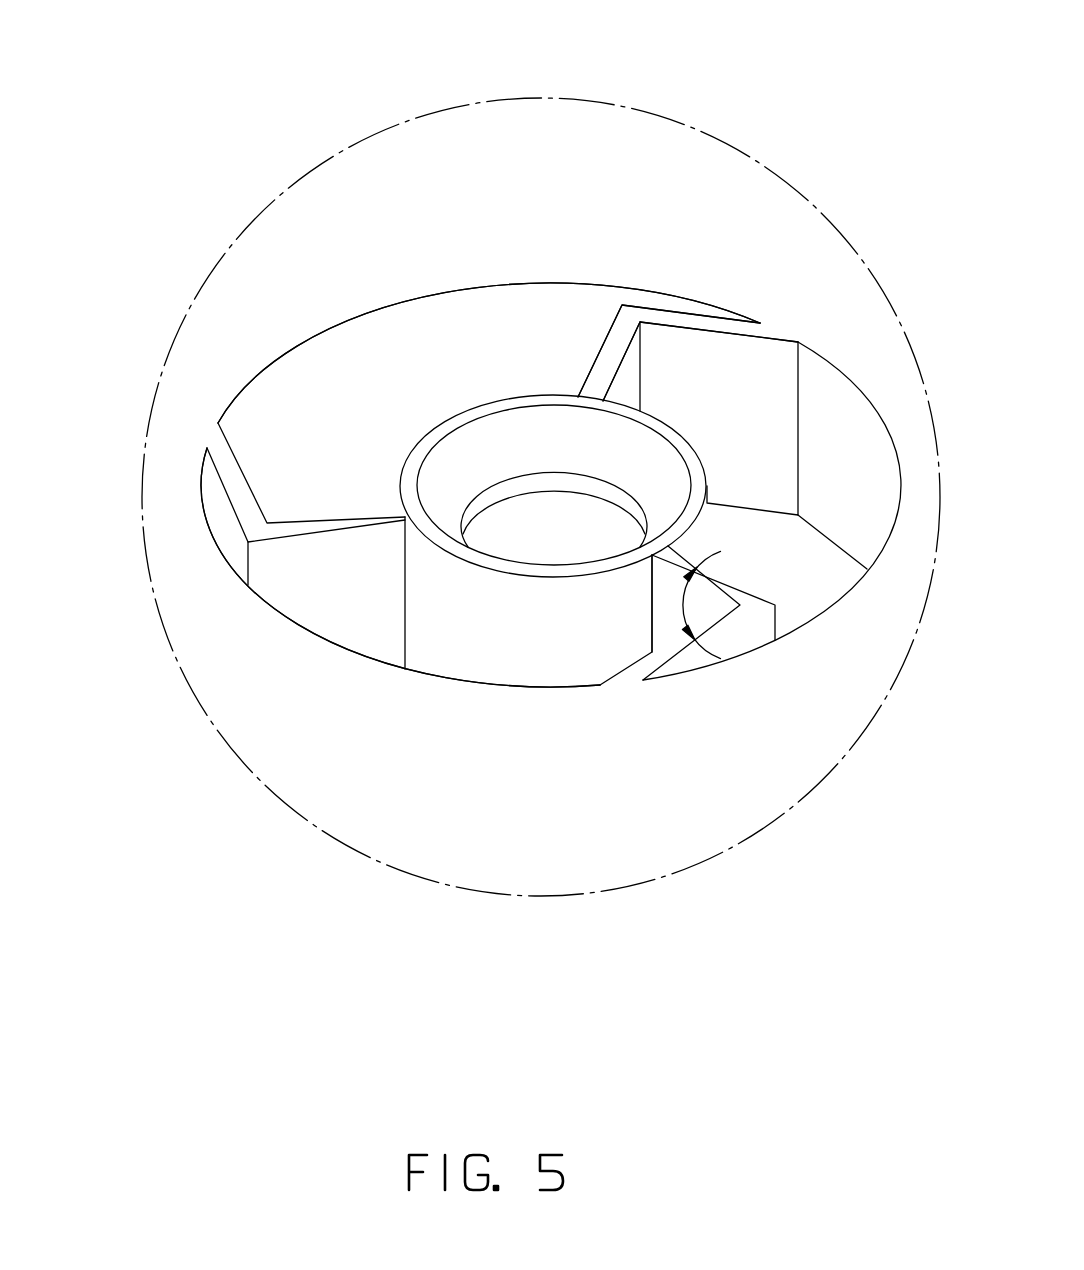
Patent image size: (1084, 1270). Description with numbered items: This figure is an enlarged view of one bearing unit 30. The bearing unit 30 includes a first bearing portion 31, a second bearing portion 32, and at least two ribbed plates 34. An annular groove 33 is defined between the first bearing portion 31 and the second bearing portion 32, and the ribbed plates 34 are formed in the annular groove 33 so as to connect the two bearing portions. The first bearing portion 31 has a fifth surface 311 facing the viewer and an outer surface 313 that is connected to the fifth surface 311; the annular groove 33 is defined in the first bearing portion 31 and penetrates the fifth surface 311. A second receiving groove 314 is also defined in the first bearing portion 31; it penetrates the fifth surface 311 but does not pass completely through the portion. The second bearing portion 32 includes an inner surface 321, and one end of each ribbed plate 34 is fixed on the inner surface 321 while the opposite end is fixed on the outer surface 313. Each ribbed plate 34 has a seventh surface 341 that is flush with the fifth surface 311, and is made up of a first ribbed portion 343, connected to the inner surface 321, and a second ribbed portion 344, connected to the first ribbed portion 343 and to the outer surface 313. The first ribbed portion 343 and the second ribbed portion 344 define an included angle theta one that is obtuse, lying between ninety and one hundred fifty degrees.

The bearing unit 30 is at (540, 53).
The first bearing portion 31 is at (62, 682).
The fifth surface 311 is at (525, 568).
The outer surface 313 is at (425, 600).
The second receiving groove 314 is at (443, 518).
The second bearing portion 32 is at (507, 687).
The inner surface 321 is at (373, 370).
The annular groove 33 is at (360, 502).
The ribbed plate 34 is at (752, 376).
The seventh surface 341 is at (728, 583).
The first ribbed portion 343 is at (700, 323).
The second ribbed portion 344 is at (613, 345).